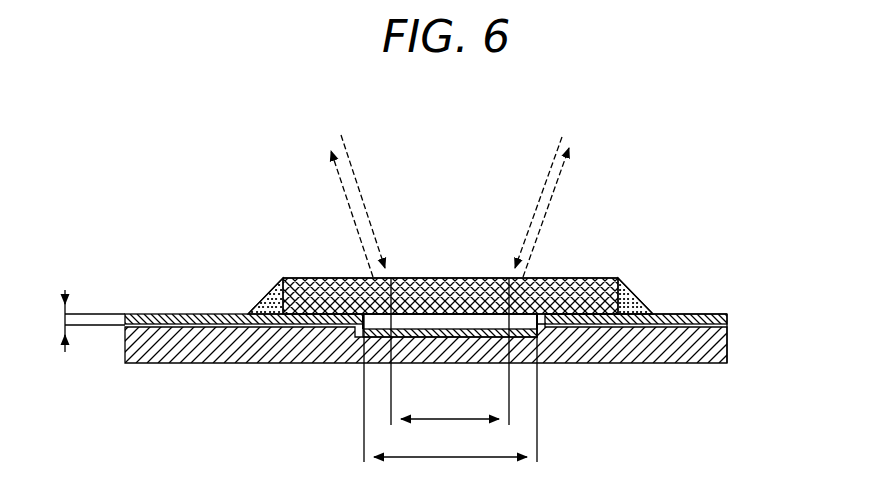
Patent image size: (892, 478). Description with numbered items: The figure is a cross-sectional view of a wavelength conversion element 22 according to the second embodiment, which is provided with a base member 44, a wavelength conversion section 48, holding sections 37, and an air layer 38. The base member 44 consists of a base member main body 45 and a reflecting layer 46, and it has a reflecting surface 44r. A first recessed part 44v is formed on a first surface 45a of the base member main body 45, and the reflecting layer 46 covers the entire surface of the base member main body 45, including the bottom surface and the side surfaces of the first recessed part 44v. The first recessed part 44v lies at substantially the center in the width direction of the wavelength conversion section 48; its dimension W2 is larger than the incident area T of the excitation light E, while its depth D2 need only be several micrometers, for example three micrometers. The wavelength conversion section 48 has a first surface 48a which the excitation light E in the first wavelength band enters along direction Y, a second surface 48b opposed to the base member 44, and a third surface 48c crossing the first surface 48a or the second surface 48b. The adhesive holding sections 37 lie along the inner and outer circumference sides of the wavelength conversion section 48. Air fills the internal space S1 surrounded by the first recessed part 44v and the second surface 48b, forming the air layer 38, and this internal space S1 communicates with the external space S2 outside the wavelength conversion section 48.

The wavelength conversion element 22 is at (293, 178).
The holding section 37 is at (257, 300).
The air layer 38 is at (427, 322).
The base member 44 is at (469, 322).
The reflecting surface 44r is at (697, 313).
The first recessed part 44v is at (466, 320).
The base member main body 45 is at (723, 350).
The first surface 45a is at (721, 316).
The reflecting layer 46 is at (723, 318).
The wavelength conversion section 48 is at (317, 285).
The first surface 48a is at (587, 277).
The second surface 48b is at (325, 314).
The third surface 48c is at (268, 292).
The excitation light E is at (533, 220).
The beam direction Y is at (548, 218).
The internal space S1 is at (485, 303).
The external space S2 is at (197, 153).
The depth D2 is at (77, 321).
The incident area T is at (450, 351).
The dimension W2 is at (450, 388).